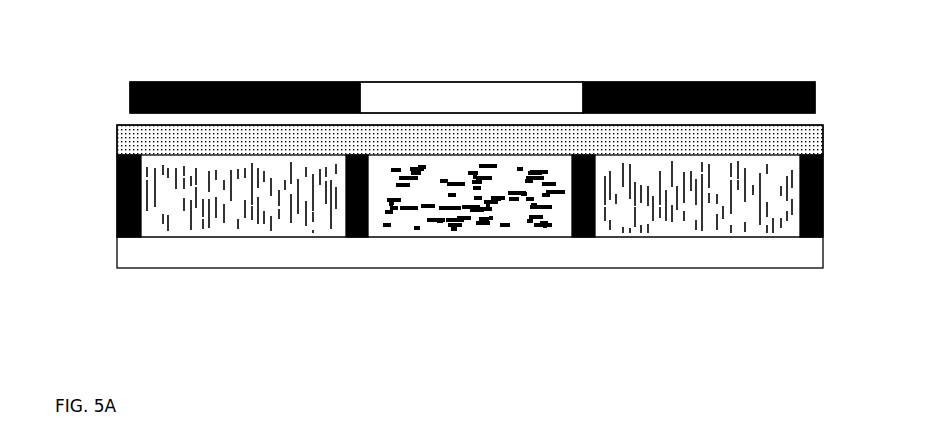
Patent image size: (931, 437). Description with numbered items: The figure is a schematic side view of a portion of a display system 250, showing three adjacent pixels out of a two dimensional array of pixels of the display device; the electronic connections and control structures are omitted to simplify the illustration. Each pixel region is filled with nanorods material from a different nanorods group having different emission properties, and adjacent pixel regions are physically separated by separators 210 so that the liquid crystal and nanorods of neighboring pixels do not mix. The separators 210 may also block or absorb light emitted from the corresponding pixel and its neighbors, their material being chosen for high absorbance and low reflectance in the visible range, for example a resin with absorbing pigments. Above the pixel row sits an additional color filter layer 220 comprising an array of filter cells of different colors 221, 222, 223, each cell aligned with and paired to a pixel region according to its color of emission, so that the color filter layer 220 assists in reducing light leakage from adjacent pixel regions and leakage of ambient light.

The display system 250 is at (106, 44).
The color filter layer 220 is at (442, 97).
The filter cell 221 is at (238, 82).
The filter cell 222 is at (463, 82).
The filter cell 223 is at (690, 80).
The separators 210 is at (800, 215).